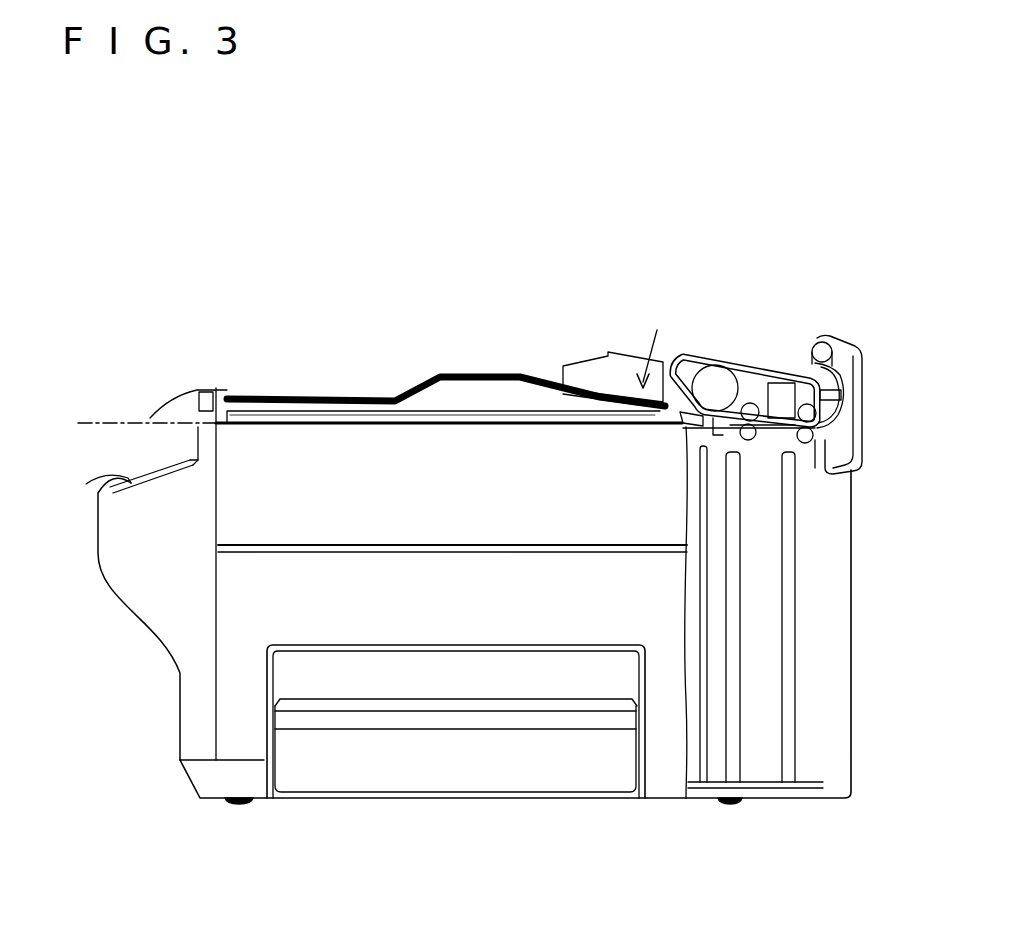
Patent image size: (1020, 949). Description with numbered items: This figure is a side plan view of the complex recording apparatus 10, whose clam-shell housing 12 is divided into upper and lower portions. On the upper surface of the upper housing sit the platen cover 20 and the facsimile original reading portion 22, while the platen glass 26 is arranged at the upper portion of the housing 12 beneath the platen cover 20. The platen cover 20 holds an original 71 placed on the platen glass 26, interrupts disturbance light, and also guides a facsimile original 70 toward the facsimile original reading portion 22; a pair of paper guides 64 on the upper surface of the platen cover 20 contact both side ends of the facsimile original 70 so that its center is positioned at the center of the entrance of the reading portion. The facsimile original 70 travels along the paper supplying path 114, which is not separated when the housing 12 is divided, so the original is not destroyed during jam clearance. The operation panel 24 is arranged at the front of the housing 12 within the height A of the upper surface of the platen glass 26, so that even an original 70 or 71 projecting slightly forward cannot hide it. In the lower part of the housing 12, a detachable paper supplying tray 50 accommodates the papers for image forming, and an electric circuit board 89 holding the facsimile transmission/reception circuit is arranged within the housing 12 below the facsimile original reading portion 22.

The complex recording apparatus 10 is at (243, 267).
The housing 12 is at (846, 562).
The platen cover 20 is at (447, 374).
The facsimile original reading portion 22 is at (742, 360).
The operation panel 24 is at (115, 481).
The platen glass 26 is at (487, 423).
The paper supplying tray 50 is at (493, 765).
The paper guides 64 is at (597, 362).
The facsimile original 70 is at (150, 418).
The original 71 is at (198, 428).
The electric circuit board 89 is at (742, 622).
The paper supplying path 114 is at (663, 343).
The height of the upper surface of the platen glass A is at (134, 423).